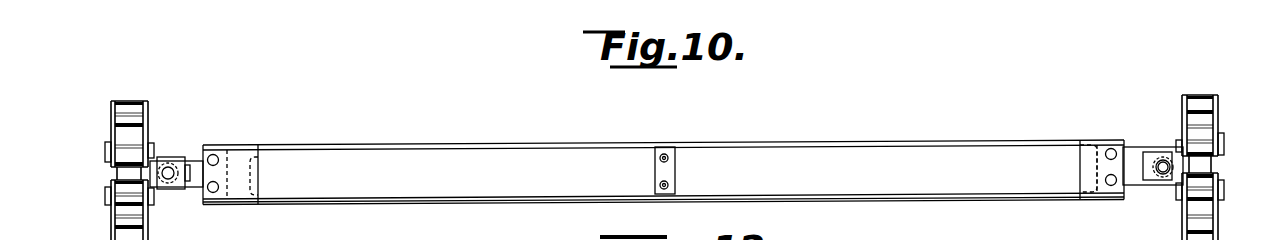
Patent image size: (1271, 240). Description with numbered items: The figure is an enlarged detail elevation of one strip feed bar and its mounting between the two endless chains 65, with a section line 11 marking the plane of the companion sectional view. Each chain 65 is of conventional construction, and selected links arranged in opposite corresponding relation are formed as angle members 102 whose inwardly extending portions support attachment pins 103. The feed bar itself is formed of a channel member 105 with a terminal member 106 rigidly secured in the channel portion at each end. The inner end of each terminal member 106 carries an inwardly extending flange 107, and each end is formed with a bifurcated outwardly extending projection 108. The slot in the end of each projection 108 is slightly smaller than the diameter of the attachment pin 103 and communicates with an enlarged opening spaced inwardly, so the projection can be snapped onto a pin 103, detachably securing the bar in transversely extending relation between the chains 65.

The section line 11- 11 is at (104, 173).
The endless members 65 is at (148, 110).
The angle members 102 is at (158, 157).
The attachment pins 103 is at (172, 172).
The channel member 105 is at (1065, 142).
The terminal member 106 is at (218, 172).
The inwardly extending flange 107 is at (257, 175).
The bifurcated outwardly extending projection 108 is at (192, 188).